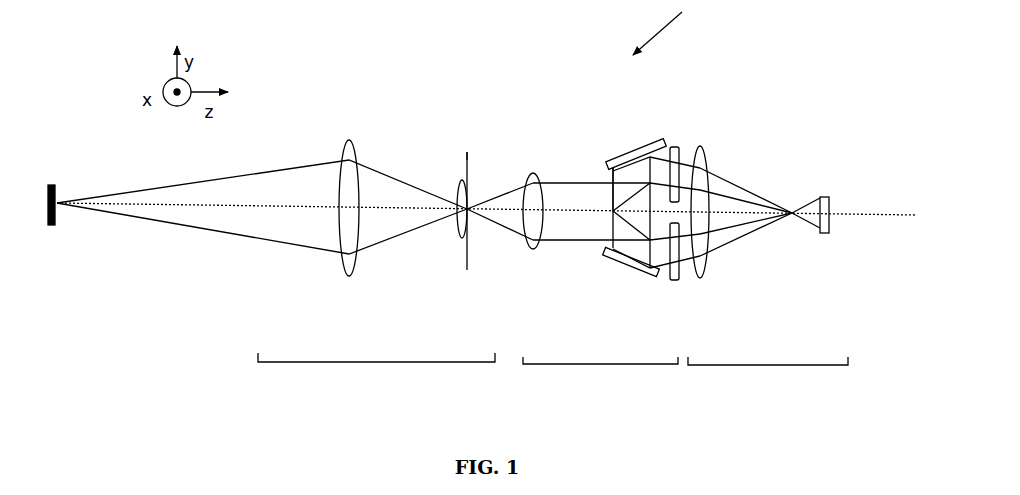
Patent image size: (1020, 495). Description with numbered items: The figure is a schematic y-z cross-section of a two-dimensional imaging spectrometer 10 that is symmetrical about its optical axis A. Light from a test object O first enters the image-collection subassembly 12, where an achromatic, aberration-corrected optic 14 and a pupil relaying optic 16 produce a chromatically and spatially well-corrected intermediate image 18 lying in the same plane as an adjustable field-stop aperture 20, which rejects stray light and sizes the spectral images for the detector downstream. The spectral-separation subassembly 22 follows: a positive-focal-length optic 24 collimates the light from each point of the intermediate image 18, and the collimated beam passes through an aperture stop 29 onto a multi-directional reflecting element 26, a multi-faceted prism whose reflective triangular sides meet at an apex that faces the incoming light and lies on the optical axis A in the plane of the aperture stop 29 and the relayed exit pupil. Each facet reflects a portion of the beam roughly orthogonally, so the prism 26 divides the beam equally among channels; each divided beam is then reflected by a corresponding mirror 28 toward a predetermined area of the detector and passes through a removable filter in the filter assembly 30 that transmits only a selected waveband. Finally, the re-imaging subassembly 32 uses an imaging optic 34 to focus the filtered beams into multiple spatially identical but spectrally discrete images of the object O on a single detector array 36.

The two-dimensional imaging spectrometer 10 is at (675, 27).
The image-collection subassembly 12 is at (318, 361).
The achromatic aberration-corrected optic 14 is at (330, 181).
The pupil relaying optic 16 is at (450, 229).
The intermediate image 18 is at (473, 197).
The adjustable field-stop aperture 20 is at (472, 158).
The spectral-separation subassembly 22 is at (600, 362).
The collimating optic 24 is at (560, 184).
The multi-directional reflecting element 26 is at (620, 198).
The flat reflective surfaces 28 is at (631, 147).
The aperture stop 29 is at (613, 172).
The removable spectral filter assembly 30 is at (676, 147).
The re-imaging subassembly 32 is at (765, 364).
The imaging optic 34 is at (707, 262).
The detection system 36 is at (832, 205).
The test object O is at (58, 216).
The optical axis A is at (878, 220).